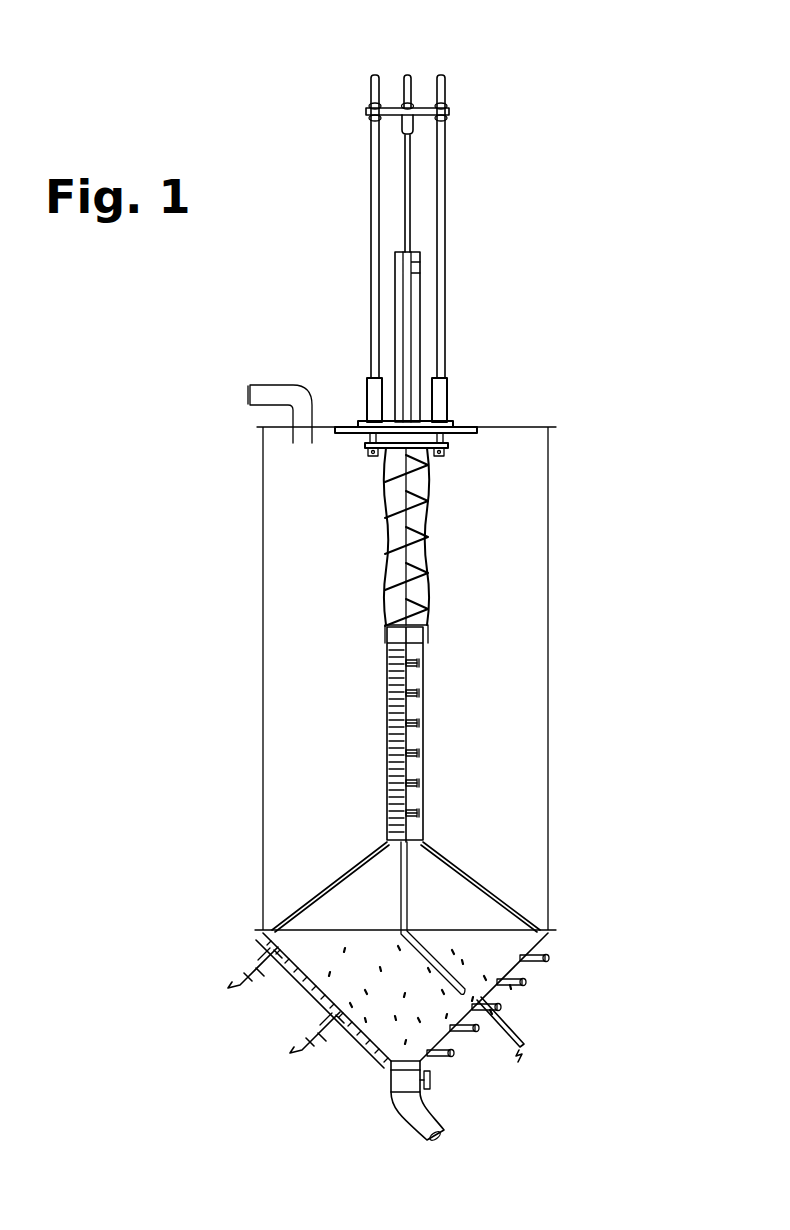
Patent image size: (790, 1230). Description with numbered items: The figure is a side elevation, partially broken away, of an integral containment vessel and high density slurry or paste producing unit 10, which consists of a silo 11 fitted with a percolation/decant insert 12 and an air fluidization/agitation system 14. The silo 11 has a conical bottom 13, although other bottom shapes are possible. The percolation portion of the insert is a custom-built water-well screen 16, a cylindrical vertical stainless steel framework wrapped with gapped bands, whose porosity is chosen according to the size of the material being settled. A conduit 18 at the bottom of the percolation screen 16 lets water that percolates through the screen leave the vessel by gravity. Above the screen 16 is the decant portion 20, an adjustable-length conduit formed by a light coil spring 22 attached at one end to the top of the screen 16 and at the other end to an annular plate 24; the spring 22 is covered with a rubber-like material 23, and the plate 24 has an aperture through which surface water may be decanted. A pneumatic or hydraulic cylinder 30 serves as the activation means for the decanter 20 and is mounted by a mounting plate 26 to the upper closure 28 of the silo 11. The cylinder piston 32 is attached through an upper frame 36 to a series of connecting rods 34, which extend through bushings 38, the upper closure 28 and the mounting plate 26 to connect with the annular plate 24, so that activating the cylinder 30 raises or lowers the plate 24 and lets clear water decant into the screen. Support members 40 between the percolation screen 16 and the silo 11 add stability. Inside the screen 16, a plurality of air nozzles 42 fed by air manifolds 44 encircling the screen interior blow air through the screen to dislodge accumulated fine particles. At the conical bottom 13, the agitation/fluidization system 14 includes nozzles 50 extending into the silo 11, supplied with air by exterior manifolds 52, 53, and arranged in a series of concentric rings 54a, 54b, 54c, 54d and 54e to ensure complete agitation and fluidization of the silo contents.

The integral containment vessel and high density slurry or paste producing unit 10 is at (578, 320).
The silo 11 is at (548, 662).
The percolation/decant insert 12 is at (489, 618).
The conical bottom 13 is at (541, 943).
The air fluidization/agitation system 14 is at (224, 1008).
The percolation screen 16 is at (387, 727).
The conduit 18 is at (522, 1034).
The decant portion 20 is at (385, 540).
The coil spring 22 is at (428, 527).
The rubber-like material 23 is at (392, 610).
The annular plate 24 is at (358, 446).
The mounting plate 26 is at (478, 432).
The upper closure 28 is at (523, 427).
The pneumatic or hydraulic cylinder 30 is at (398, 291).
The cylinder piston 32 is at (411, 212).
The connecting rods 34 is at (371, 140).
The upper frame 36 is at (392, 110).
The bushings 38 is at (371, 395).
The support members 40 is at (496, 892).
The air nozzles 42 is at (418, 722).
The air manifolds 44 is at (408, 753).
The nozzles 50 is at (416, 1018).
The exterior manifold 52 is at (262, 960).
The exterior manifold 53 is at (347, 1053).
The concentric ring 54a is at (548, 958).
The concentric ring 54b is at (526, 982).
The concentric ring 54c is at (501, 1007).
The concentric ring 54d is at (478, 1031).
The concentric ring 54e is at (450, 1056).